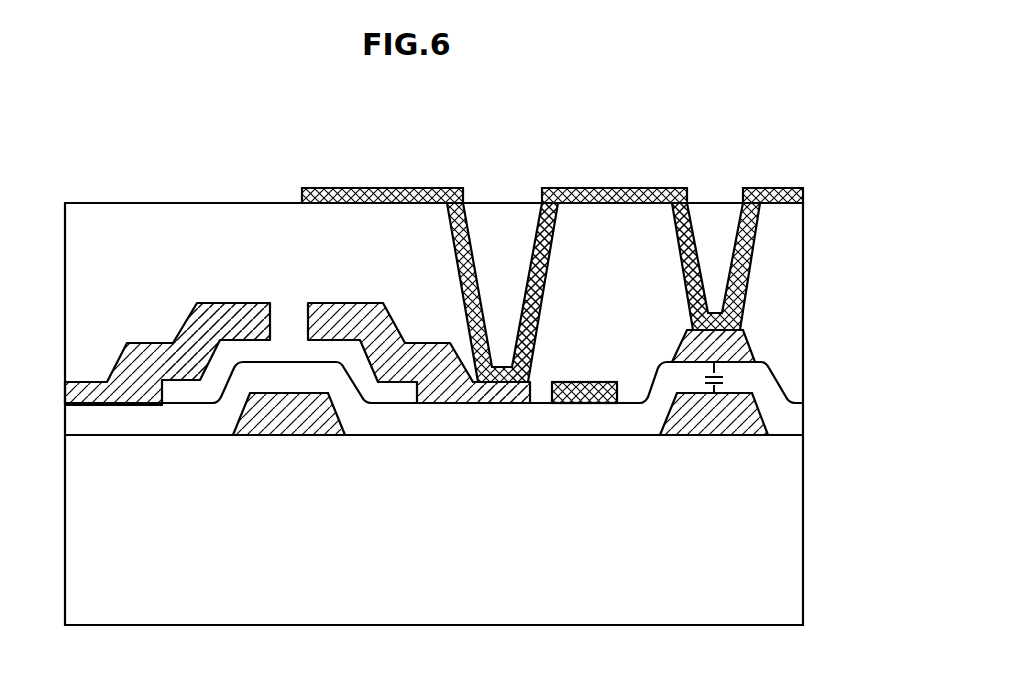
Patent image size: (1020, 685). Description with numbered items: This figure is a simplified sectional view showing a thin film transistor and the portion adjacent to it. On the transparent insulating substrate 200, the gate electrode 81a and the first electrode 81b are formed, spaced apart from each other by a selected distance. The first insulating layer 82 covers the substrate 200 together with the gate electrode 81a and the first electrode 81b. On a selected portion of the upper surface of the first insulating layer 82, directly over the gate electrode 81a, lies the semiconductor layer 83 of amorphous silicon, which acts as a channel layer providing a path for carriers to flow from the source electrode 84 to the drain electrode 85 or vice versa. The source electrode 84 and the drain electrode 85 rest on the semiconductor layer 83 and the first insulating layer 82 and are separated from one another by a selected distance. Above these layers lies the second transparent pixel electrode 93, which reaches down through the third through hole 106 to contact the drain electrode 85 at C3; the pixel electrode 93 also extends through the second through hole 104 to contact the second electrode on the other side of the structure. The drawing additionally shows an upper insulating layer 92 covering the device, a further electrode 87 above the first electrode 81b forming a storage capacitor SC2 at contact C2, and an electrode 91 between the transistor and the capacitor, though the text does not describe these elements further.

The transparent insulating substrate 200 is at (795, 550).
The protective insulating layer 92 is at (71, 222).
The first insulating layer 82 is at (795, 415).
The gate electrode 81a is at (292, 425).
The first electrode 81b is at (733, 427).
The source electrode 84 is at (136, 355).
The semiconductor layer 83 is at (247, 348).
The drain electrode 85 is at (327, 310).
The contact C3 is at (500, 384).
The electrode 91 is at (588, 404).
The capacitor upper electrode 87 is at (738, 342).
The contact C2 is at (704, 333).
The storage capacitor SC2 is at (733, 378).
The second transparent pixel electrode 93 is at (805, 195).
The third through hole 106 is at (550, 268).
The second through hole 104 is at (681, 268).